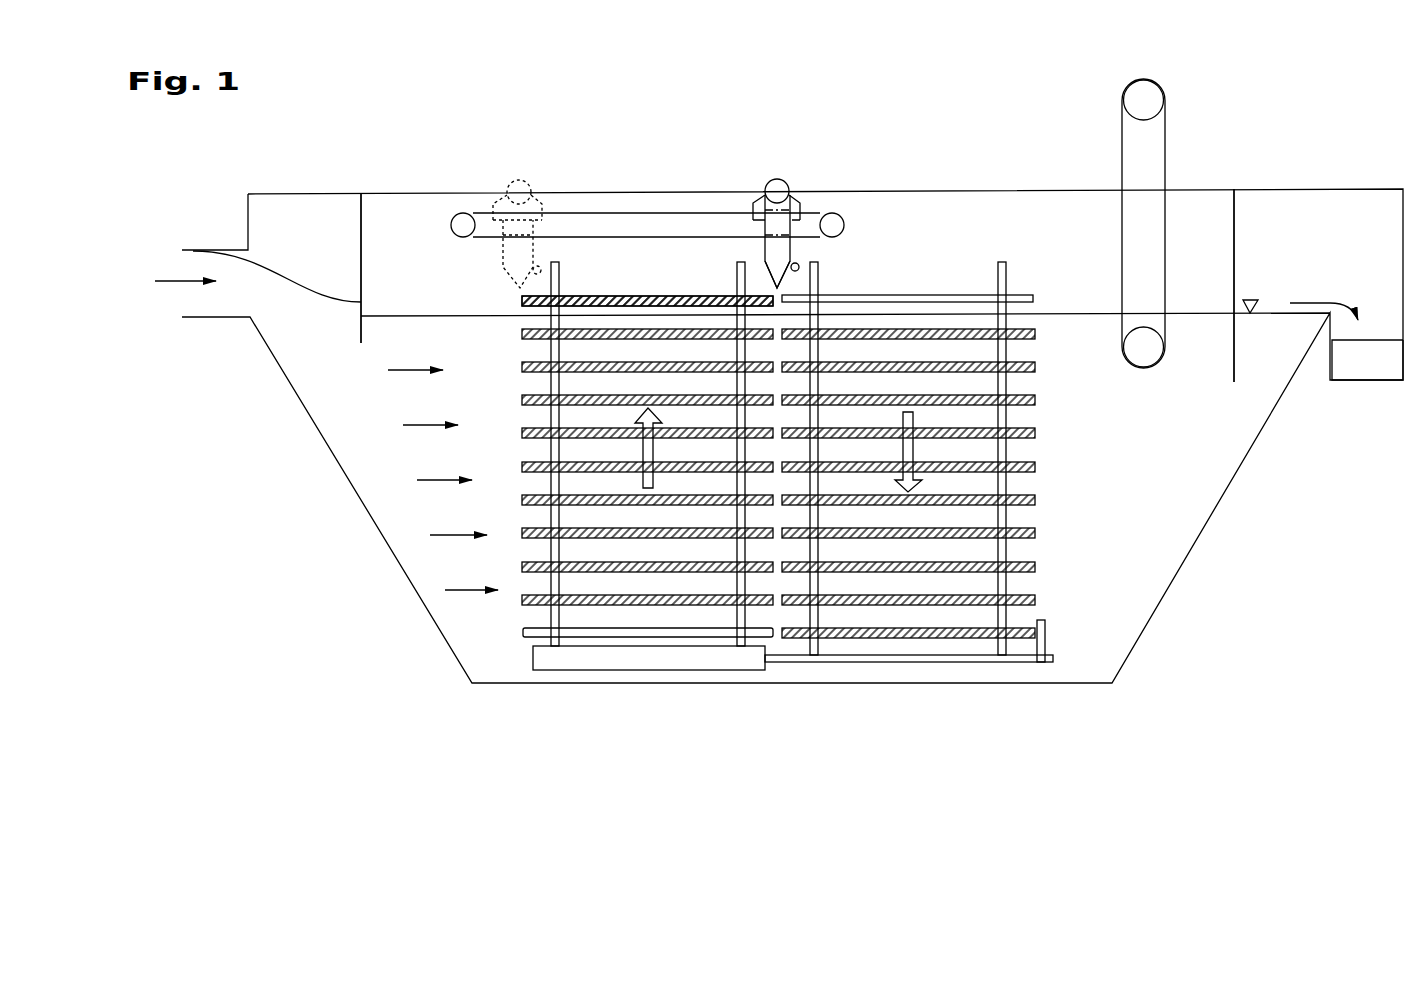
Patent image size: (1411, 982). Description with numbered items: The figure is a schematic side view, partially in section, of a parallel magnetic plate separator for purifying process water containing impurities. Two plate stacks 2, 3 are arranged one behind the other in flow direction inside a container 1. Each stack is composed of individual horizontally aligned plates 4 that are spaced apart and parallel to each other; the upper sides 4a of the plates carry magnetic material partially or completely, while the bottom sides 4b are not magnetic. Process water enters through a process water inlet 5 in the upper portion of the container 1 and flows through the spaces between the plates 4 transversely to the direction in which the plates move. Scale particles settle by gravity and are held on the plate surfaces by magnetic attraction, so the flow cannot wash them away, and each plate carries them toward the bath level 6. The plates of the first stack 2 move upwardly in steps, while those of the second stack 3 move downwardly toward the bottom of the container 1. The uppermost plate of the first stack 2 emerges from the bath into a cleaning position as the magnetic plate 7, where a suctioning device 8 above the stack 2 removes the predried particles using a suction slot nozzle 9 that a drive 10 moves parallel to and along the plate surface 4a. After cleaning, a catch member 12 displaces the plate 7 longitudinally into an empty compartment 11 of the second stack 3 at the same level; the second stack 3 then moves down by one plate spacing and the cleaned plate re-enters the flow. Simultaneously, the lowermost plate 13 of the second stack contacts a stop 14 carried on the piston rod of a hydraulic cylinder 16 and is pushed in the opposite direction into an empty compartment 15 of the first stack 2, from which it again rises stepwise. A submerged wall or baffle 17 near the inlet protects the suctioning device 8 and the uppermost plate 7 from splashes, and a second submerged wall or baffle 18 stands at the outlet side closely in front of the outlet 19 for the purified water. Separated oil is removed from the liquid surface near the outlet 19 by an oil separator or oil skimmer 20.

The container 1 is at (353, 487).
The first plate stack 2 is at (617, 501).
The second plate stack 3 is at (935, 495).
The plate 4 is at (1035, 500).
The upper side of plate 4a is at (527, 595).
The bottom side of plate 4b is at (535, 608).
The process water inlet 5 is at (178, 268).
The bath level 6 is at (1297, 283).
The magnetic plate in cleaning position 7 is at (632, 265).
The suctioning device 8 is at (780, 185).
The suction slot nozzle 9 is at (772, 253).
The drive 10 is at (757, 205).
The empty compartment of second stack 11 is at (927, 296).
The catch member 12 is at (790, 282).
The lowermost plate of second stack 13 is at (860, 633).
The stop 14 is at (1047, 642).
The empty compartment of first stack 15 is at (530, 637).
The hydraulic cylinder 16 is at (693, 657).
The submerged wall or baffle 17 is at (367, 205).
The second submerged wall or baffle 18 is at (1238, 205).
The outlet 19 is at (1370, 362).
The oil separator or oil skimmer 20 is at (1130, 147).